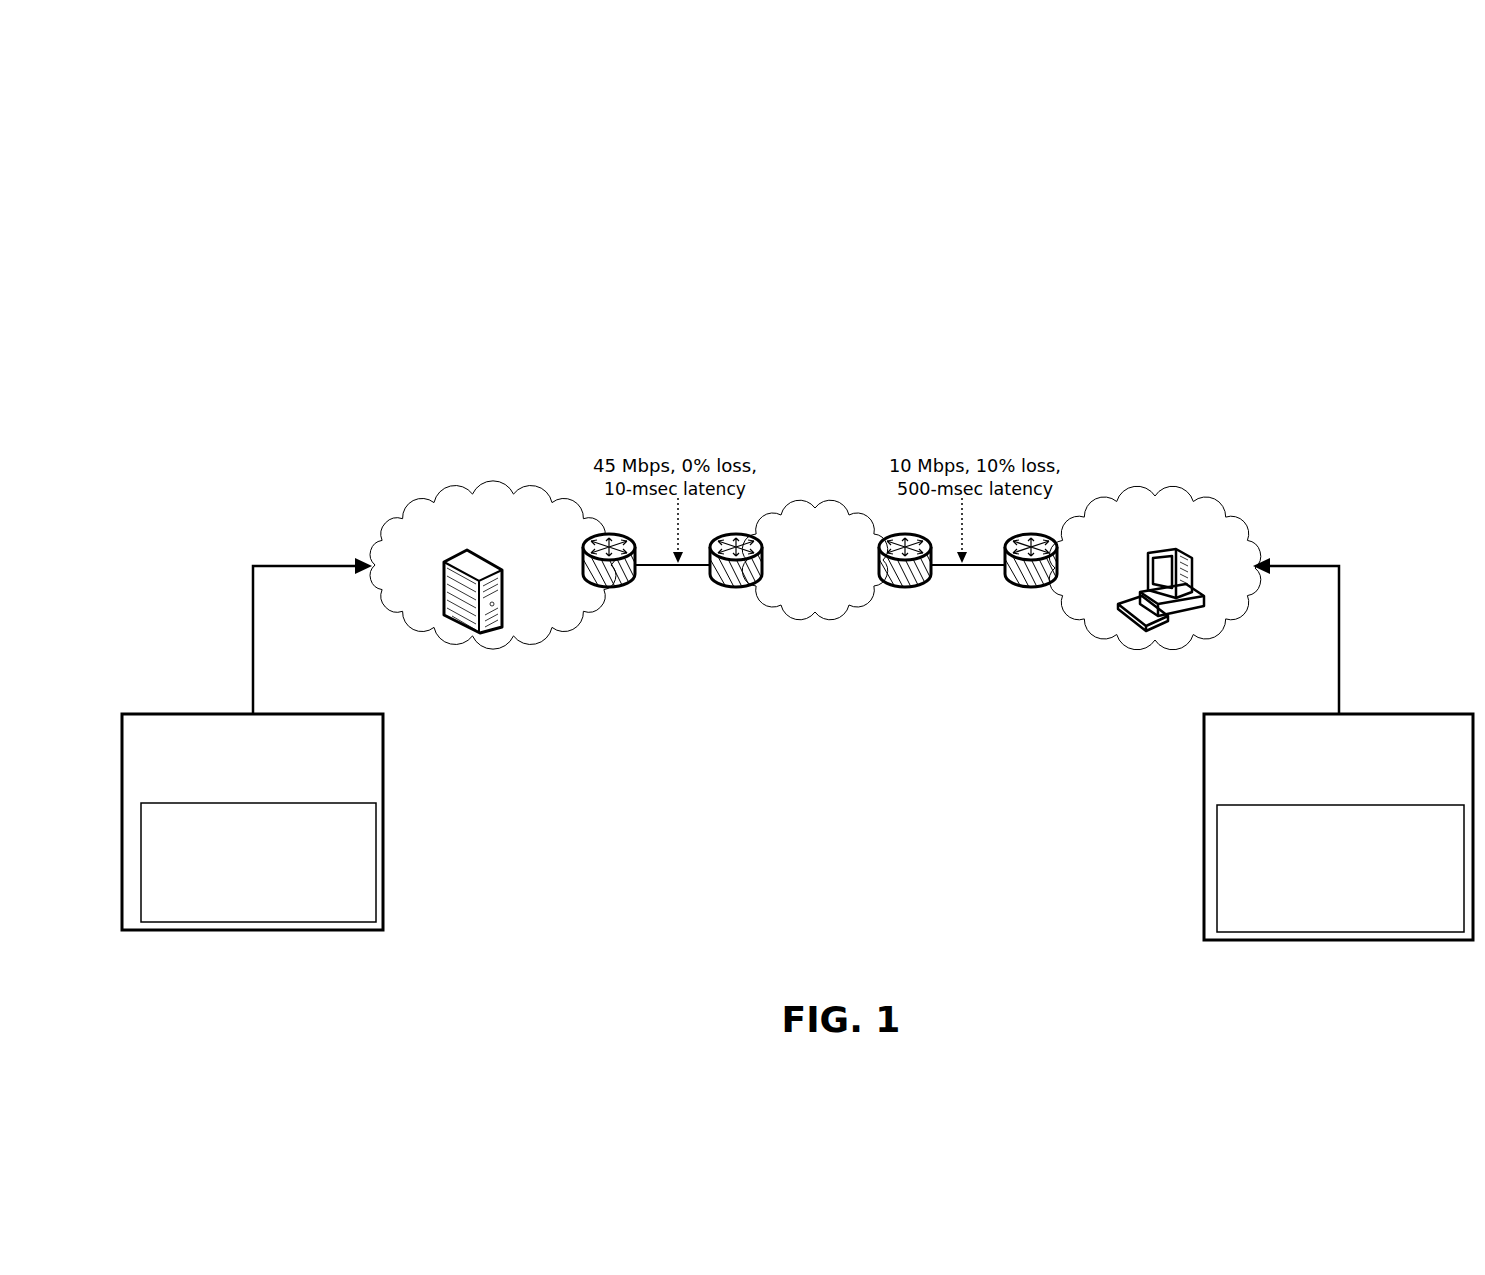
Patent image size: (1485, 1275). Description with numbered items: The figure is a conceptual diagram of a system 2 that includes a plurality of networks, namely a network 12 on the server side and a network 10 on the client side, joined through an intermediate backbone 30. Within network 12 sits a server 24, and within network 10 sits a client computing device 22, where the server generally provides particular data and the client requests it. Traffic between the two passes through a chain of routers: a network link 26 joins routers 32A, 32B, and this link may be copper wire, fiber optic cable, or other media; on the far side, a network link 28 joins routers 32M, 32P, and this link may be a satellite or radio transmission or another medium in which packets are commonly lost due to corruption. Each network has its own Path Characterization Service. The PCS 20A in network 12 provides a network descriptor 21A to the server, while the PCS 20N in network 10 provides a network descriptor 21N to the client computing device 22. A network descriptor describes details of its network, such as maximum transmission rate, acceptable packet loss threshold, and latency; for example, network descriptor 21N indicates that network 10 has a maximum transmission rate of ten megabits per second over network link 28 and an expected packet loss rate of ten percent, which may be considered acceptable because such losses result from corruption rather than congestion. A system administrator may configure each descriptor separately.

The system 2 is at (1220, 274).
The network 10 is at (1150, 500).
The network 12 is at (480, 493).
The Path Characterization Service (PCS) 20A is at (252, 822).
The Path Characterization Service (PCS) 20N is at (1338, 827).
The network descriptor 21A is at (300, 802).
The network descriptor 21N is at (1373, 804).
The client computing device 22 is at (1168, 612).
The server 24 is at (470, 622).
The network link 26 is at (660, 567).
The network link 28 is at (947, 567).
The backbone network 30 is at (810, 510).
The router 32A is at (609, 582).
The router 32B is at (736, 582).
The router 32M is at (905, 582).
The router 32P is at (1031, 582).